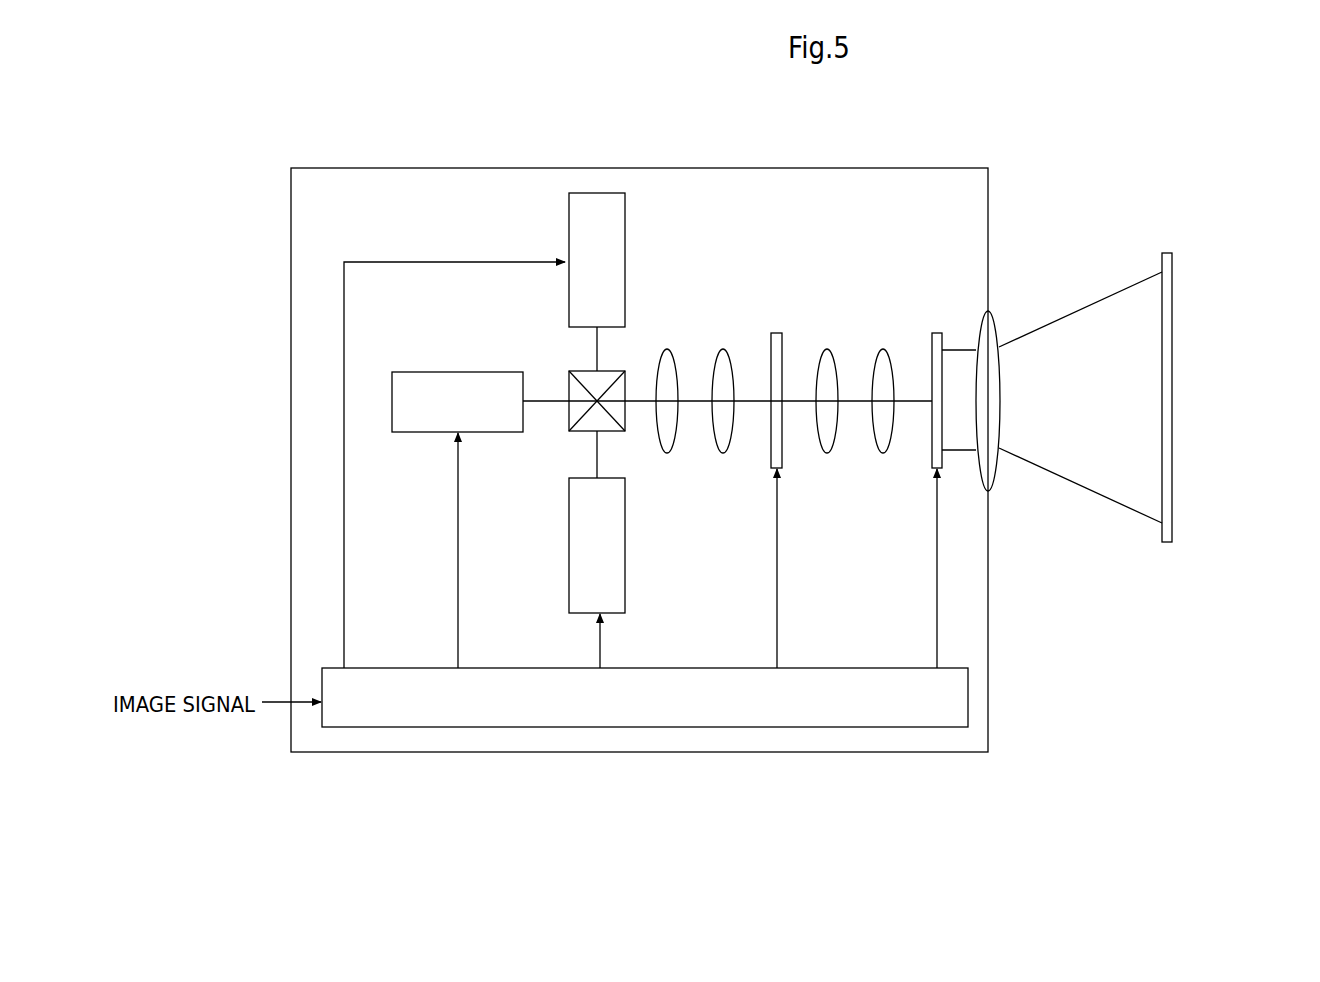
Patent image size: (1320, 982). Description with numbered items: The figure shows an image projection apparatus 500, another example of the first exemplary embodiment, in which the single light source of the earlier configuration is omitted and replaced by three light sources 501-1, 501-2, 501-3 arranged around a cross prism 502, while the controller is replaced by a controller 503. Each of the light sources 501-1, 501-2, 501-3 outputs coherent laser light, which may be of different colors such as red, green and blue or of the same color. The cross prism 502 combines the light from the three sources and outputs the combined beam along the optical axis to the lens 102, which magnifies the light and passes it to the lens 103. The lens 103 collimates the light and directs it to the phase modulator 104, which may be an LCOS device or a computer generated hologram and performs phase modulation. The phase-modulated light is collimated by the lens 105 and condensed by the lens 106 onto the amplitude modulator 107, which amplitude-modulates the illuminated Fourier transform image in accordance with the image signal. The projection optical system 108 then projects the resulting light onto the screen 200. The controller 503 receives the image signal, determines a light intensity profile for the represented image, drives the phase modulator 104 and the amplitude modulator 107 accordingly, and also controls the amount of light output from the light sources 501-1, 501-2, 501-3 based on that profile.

The image projection apparatus 500 is at (808, 168).
The controller 503 is at (845, 668).
The light source 501-1 is at (626, 265).
The light source 501-2 is at (485, 372).
The light source 501-3 is at (626, 548).
The cross prism 502 is at (583, 433).
The lens 102 is at (665, 349).
The lens 103 is at (722, 349).
The phase modulator 104 is at (776, 333).
The lens 105 is at (826, 349).
The lens 106 is at (882, 349).
The amplitude modulator 107 is at (936, 333).
The projection optical system 108 is at (986, 312).
The screen 200 is at (1165, 253).